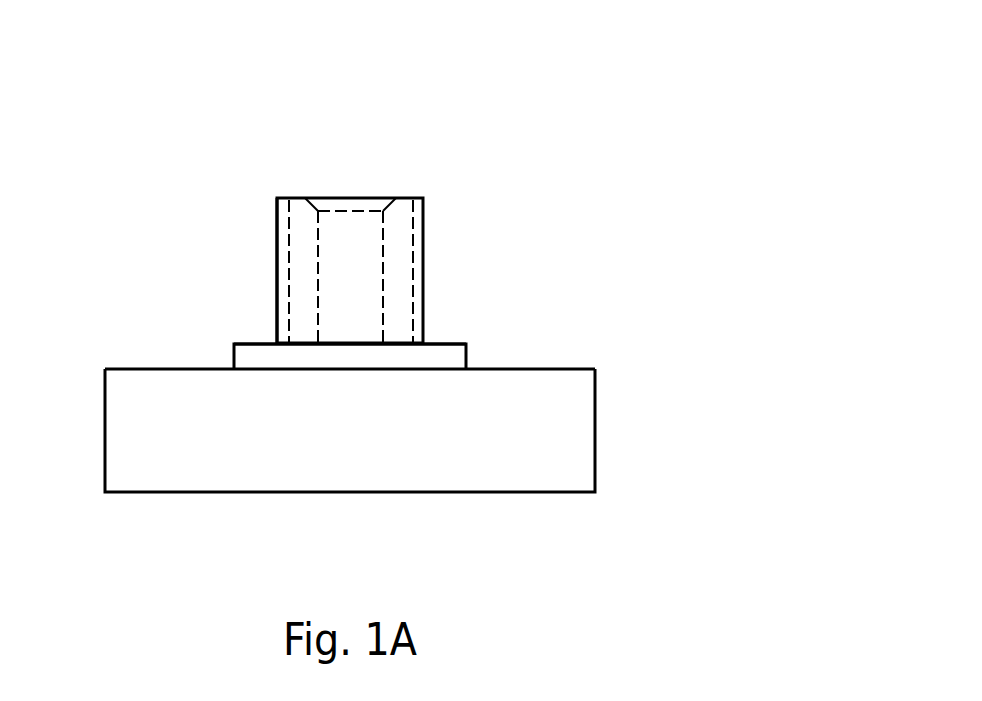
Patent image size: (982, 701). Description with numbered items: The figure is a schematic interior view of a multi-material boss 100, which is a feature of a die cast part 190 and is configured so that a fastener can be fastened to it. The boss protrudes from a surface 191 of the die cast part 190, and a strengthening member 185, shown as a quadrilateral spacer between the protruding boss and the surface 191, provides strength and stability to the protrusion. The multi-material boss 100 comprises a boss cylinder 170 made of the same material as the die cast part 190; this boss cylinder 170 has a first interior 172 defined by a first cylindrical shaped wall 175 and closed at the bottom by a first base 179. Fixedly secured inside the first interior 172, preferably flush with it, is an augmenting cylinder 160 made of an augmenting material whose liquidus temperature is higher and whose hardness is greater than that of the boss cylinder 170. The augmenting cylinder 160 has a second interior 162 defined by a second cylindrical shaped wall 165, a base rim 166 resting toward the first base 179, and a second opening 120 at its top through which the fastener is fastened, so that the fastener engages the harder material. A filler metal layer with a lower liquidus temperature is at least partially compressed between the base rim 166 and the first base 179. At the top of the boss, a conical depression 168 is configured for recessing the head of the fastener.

The multi-material boss 100 is at (722, 126).
The second opening 120 is at (365, 158).
The augmenting cylinder 160 is at (400, 250).
The second interior 162 is at (305, 250).
The second cylindrical shaped wall 165 is at (385, 238).
The base rim 166 is at (402, 341).
The conical depression 168 is at (315, 198).
The boss cylinder 170 is at (277, 297).
The first interior 172 is at (435, 245).
The first cylindrical shaped wall 175 is at (289, 317).
The first base 179 is at (350, 342).
The strengthening member 185 is at (232, 355).
The die cast part 190 is at (594, 413).
The surface 191 is at (146, 367).